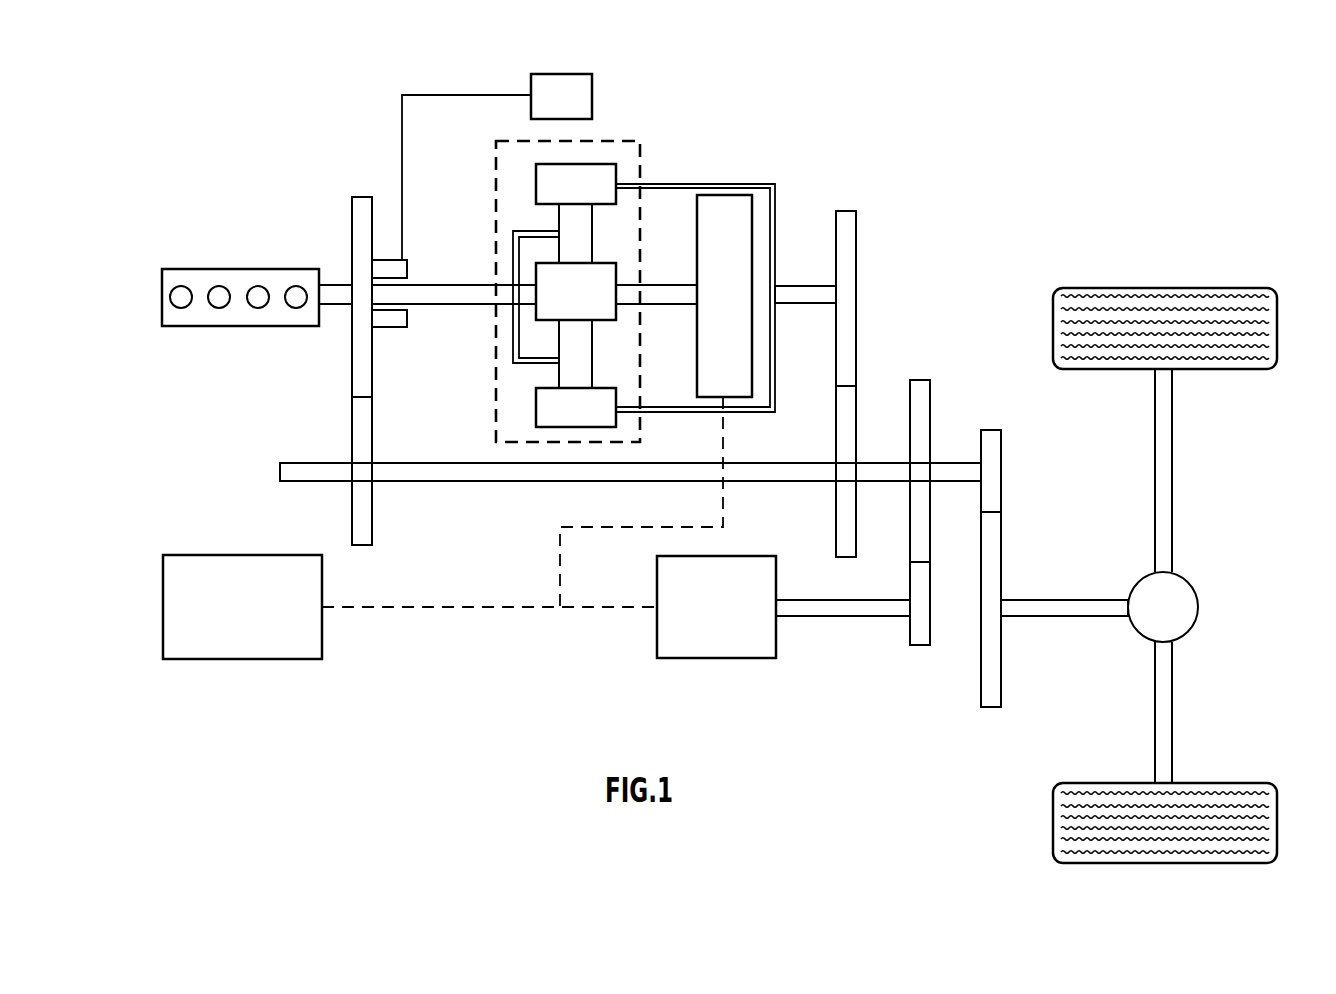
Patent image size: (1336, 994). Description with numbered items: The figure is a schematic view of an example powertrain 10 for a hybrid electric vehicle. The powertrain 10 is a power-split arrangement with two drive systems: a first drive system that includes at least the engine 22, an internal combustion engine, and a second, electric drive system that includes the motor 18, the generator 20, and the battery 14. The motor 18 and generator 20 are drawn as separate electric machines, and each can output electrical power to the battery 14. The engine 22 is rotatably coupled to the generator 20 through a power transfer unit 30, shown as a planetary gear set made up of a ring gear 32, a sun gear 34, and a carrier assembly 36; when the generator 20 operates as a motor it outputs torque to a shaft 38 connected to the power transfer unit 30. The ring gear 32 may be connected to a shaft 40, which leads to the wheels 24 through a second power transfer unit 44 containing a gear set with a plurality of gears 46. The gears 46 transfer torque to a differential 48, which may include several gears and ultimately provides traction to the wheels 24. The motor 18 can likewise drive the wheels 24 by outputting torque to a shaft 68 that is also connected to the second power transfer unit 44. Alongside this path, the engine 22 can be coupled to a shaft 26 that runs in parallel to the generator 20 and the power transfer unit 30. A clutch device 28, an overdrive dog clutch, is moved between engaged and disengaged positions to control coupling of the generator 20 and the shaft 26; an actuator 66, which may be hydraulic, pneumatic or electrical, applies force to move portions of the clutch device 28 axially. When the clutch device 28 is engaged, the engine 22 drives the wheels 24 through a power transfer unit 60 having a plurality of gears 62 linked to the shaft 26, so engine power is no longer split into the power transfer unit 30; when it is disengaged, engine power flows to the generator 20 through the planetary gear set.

The powertrain 10 is at (1030, 185).
The battery 14 is at (178, 660).
The motor 18 is at (717, 659).
The generator 20 is at (742, 195).
The engine 22 is at (178, 328).
The wheels 24 is at (1277, 822).
The shaft 26 is at (408, 463).
The clutch device 28 is at (389, 258).
The power transfer unit 30 is at (640, 141).
The ring gear 32 is at (618, 170).
The sun gear 34 is at (607, 262).
The carrier assembly 36 is at (513, 342).
The shaft 38 is at (656, 284).
The shaft 40 is at (800, 285).
The second power transfer unit 44 is at (968, 399).
The gears 46 is at (1001, 497).
The differential 48 is at (1195, 582).
The power transfer unit 60 is at (312, 402).
The gears 62 is at (372, 363).
The actuator 66 is at (548, 110).
The shaft 68 is at (843, 618).